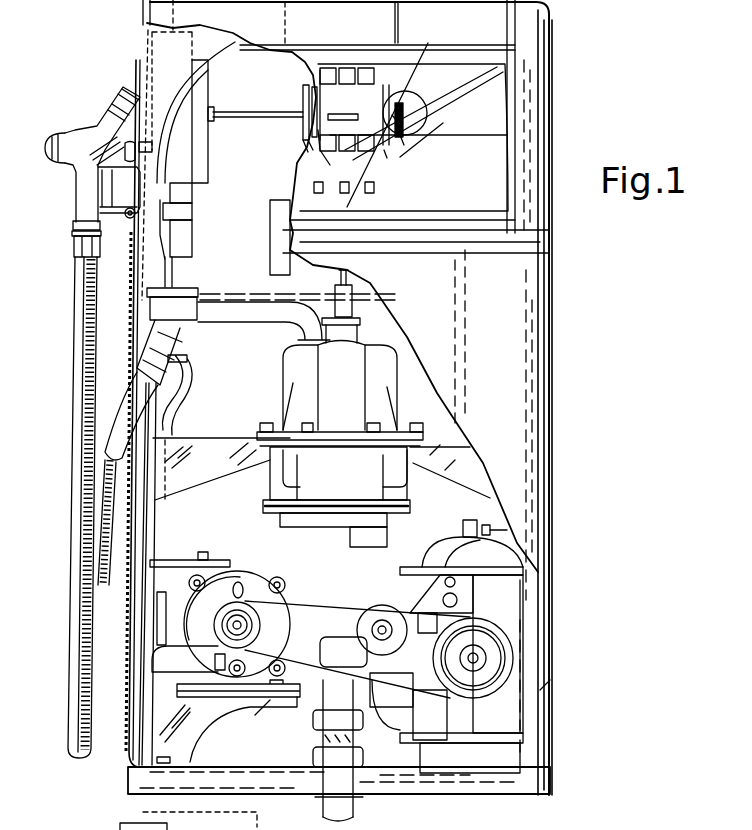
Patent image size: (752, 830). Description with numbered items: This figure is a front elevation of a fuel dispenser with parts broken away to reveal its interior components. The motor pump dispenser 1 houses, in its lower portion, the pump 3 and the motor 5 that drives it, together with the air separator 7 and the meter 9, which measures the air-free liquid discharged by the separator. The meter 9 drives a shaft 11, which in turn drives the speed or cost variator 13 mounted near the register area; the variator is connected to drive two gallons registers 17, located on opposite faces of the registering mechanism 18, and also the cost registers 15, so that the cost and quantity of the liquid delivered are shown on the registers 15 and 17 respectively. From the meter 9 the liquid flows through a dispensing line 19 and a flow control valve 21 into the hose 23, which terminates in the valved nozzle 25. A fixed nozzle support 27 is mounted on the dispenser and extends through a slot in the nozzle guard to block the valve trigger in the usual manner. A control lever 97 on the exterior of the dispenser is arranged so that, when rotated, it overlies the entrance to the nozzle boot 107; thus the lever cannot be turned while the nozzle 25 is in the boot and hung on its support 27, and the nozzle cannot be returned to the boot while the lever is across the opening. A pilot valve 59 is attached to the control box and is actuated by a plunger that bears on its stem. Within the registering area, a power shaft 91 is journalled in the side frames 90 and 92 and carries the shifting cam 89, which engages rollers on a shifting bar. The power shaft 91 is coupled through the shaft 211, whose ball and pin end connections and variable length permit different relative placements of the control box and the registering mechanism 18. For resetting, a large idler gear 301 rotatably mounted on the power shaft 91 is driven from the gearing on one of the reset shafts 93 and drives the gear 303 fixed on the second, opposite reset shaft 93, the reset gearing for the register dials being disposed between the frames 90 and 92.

The motor pump dispenser 1 is at (553, 326).
The pump 3 is at (507, 647).
The motor 5 is at (270, 622).
The air separator 7 is at (453, 543).
The meter 9 is at (390, 480).
The shaft 11 is at (352, 305).
The speed or cost variator 13 is at (283, 228).
The cost registers 15 is at (324, 72).
The gallons registers 17 is at (318, 132).
The registering mechanism 18 is at (382, 155).
The dispensing line 19 is at (218, 313).
The flow control valve 21 is at (173, 310).
The hose 23 is at (78, 537).
The valved nozzle 25 is at (108, 118).
The fixed nozzle support 27 is at (129, 217).
The pilot valve 59 is at (182, 202).
The shifting cam 89 is at (303, 92).
The side frame 90 is at (315, 143).
The power shaft 91 is at (403, 116).
The side frame 92 is at (399, 115).
The reset shafts 93 is at (402, 147).
The control lever 97 is at (112, 184).
The nozzle boot 107 is at (182, 57).
The shaft 211 is at (235, 119).
The large idler gear 301 is at (405, 100).
The gear 303 is at (403, 127).